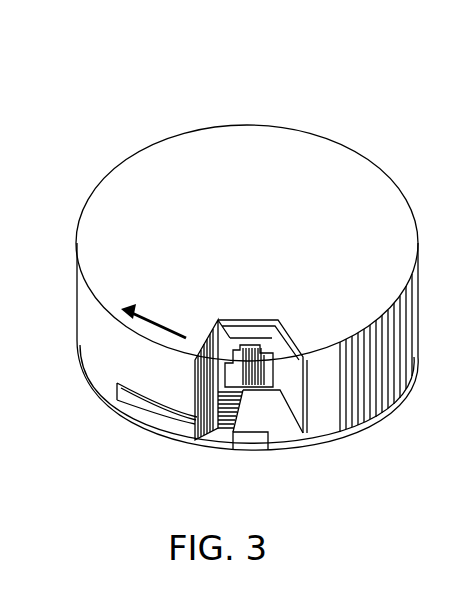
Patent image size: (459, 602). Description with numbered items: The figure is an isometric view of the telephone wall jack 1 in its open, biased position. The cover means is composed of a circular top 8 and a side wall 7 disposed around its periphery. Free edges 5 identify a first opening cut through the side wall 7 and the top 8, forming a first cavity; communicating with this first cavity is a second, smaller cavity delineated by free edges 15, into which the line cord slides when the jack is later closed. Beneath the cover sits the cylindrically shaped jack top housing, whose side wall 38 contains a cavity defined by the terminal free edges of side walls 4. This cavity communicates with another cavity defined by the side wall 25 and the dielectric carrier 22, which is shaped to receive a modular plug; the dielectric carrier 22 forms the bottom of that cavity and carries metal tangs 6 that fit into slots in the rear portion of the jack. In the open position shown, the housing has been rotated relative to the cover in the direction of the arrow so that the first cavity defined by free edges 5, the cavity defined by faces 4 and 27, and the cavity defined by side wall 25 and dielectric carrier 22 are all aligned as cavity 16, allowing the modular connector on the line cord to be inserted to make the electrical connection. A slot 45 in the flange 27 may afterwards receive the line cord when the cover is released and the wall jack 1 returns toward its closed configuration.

The wall jack 1 is at (283, 96).
The side walls 4 is at (255, 335).
The free edges 5 is at (214, 326).
The metal tangs 6 is at (242, 408).
The side wall 7 is at (114, 361).
The circular top 8 is at (249, 166).
The free edges 15 is at (117, 396).
The cavity 16 is at (289, 331).
The dielectric carrier 22 is at (235, 392).
The side wall 25 is at (233, 345).
The flange 27 is at (278, 421).
The side wall 38 is at (150, 435).
The slot 45 is at (265, 440).